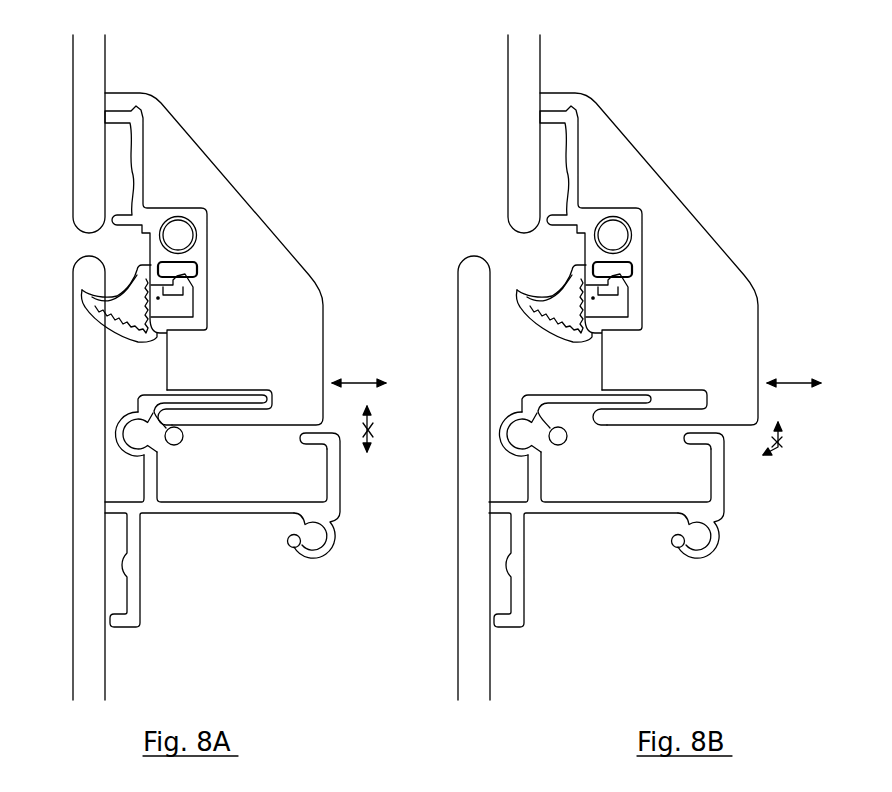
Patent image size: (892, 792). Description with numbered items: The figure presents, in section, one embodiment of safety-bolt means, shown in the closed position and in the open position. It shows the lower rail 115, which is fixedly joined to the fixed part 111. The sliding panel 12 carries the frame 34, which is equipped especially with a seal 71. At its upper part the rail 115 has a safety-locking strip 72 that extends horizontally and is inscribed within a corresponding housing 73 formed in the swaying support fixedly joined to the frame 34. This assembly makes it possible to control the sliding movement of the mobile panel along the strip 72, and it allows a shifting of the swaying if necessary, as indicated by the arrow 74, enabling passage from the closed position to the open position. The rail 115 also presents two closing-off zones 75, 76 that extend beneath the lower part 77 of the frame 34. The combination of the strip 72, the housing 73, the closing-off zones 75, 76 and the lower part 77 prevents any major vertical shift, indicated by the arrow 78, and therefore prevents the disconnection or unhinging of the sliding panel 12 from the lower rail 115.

In FIG. 8A, the sliding panel 12 is at (79, 113).
In FIG. 8B, the sliding panel 12 is at (517, 112).
In FIG. 8A, the fixed part 111 is at (78, 582).
In FIG. 8B, the fixed part 111 is at (463, 582).
In FIG. 8A, the frame 34 is at (193, 162).
In FIG. 8B, the frame 34 is at (628, 162).
In FIG. 8A, the seal 71 is at (105, 300).
In FIG. 8B, the seal 71 is at (517, 290).
In FIG. 8A, the safety-locking strip 72 is at (228, 400).
In FIG. 8B, the safety-locking strip 72 is at (642, 398).
In FIG. 8A, the housing 73 is at (275, 397).
In FIG. 8B, the housing 73 is at (710, 392).
In FIG. 8A, the arrow 74 is at (352, 383).
In FIG. 8B, the arrow 74 is at (786, 383).
In FIG. 8A, the closing-off zone 75 is at (171, 437).
In FIG. 8B, the closing-off zone 75 is at (555, 437).
In FIG. 8A, the closing-off zone 76 is at (312, 437).
In FIG. 8B, the closing-off zone 76 is at (696, 437).
In FIG. 8A, the lower part 77 is at (222, 428).
In FIG. 8B, the lower part 77 is at (606, 428).
In FIG. 8A, the arrow 78 is at (372, 450).
In FIG. 8B, the arrow 78 is at (776, 455).
In FIG. 8A, the lower rail 115 is at (240, 444).
In FIG. 8B, the lower rail 115 is at (629, 415).